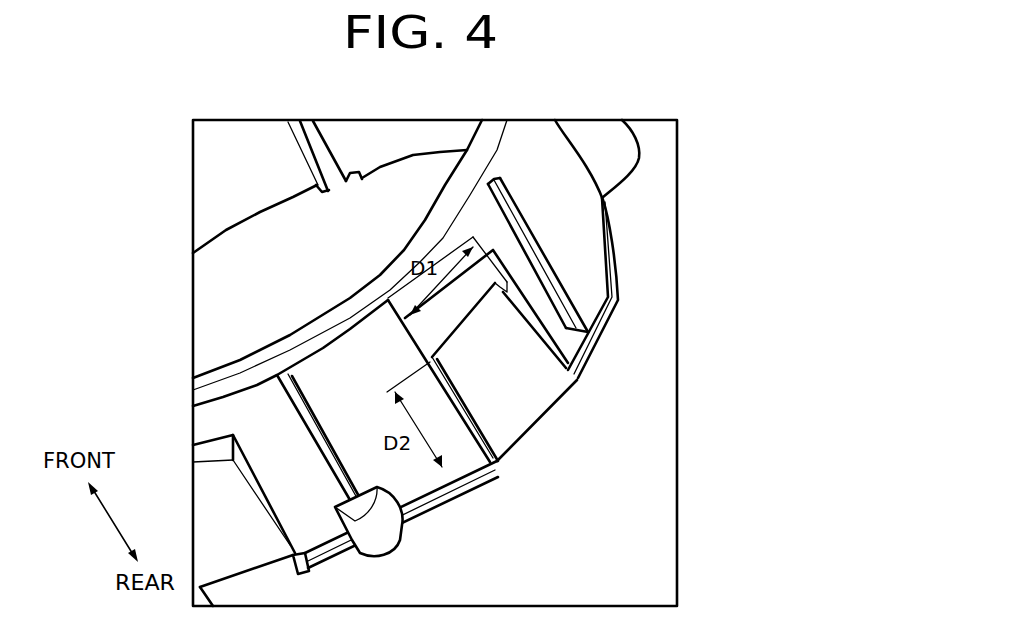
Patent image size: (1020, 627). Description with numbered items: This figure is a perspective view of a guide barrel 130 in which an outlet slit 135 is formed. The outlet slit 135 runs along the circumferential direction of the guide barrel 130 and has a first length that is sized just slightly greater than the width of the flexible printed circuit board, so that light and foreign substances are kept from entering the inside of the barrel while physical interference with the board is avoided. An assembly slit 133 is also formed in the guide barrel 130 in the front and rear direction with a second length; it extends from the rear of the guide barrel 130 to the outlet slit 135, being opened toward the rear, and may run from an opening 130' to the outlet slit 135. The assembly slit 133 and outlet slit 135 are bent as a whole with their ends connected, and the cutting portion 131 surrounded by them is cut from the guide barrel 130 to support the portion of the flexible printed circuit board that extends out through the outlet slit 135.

The guide barrel 130 is at (416, 232).
The opening 130' is at (379, 533).
The cutting portion 131 is at (528, 390).
The assembly slit 133 is at (492, 448).
The outlet slit 135 is at (505, 291).